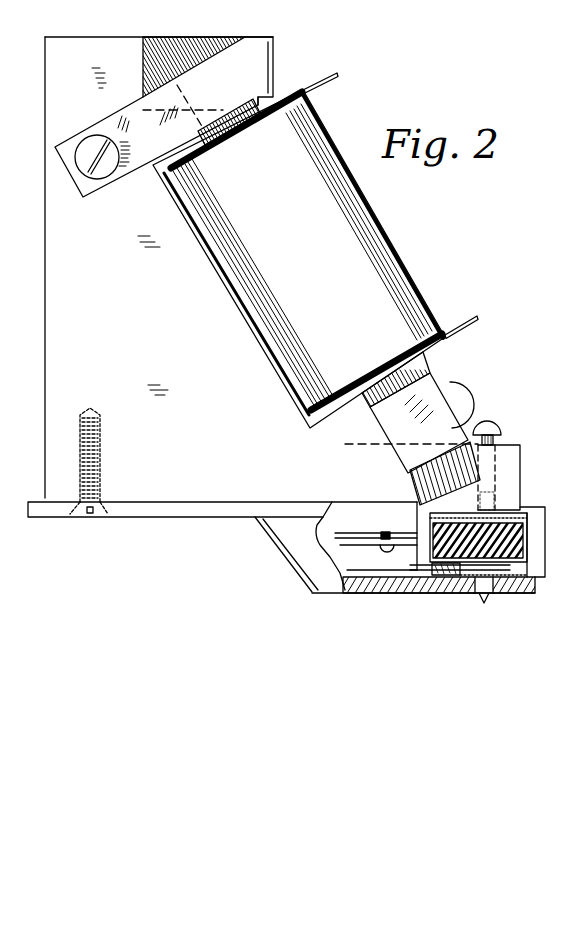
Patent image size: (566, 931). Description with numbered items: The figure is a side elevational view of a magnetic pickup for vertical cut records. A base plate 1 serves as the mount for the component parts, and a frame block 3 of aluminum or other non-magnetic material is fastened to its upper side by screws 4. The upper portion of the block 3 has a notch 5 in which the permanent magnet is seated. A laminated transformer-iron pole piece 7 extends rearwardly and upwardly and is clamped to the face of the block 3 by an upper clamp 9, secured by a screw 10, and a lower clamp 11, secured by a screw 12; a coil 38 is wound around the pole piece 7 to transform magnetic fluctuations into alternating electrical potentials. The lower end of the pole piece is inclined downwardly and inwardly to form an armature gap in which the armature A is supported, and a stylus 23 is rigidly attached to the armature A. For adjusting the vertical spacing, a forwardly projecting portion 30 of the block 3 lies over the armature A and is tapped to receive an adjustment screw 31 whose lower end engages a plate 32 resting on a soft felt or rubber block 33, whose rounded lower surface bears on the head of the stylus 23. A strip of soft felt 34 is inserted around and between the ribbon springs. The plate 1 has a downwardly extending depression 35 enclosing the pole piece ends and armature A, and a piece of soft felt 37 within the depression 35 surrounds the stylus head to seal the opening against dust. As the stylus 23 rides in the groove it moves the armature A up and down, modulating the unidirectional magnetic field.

The base plate 1 is at (220, 508).
The frame block 3 is at (62, 268).
The screws 4 is at (80, 437).
The notch 5 is at (142, 79).
The pole piece 7 is at (218, 43).
The upper clamp 9 is at (275, 58).
The screw 10 is at (83, 156).
The lower clamp 11 is at (427, 385).
The screw 12 is at (457, 402).
The stylus 23 is at (483, 599).
The forwardly projecting portion 30 is at (503, 445).
The adjustment screw 31 is at (483, 427).
The plate 32 is at (500, 513).
The soft felt or rubber block 33 is at (529, 533).
The strip of soft felt 34 is at (437, 583).
The depression 35 is at (293, 552).
The piece of soft felt 37 is at (521, 597).
The coil 38 is at (237, 243).
The armature A is at (546, 584).